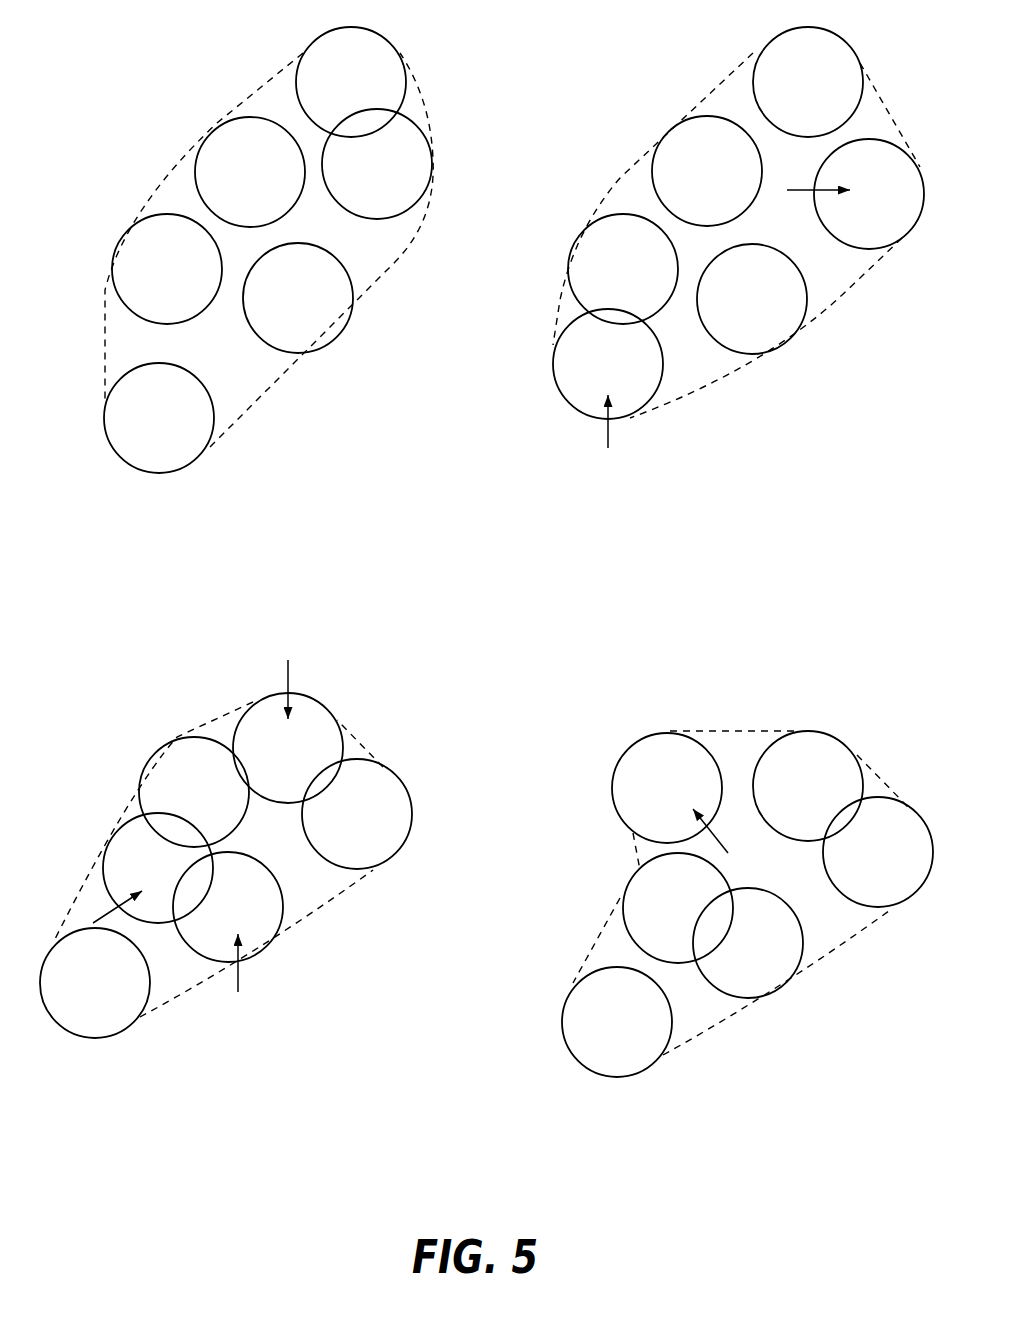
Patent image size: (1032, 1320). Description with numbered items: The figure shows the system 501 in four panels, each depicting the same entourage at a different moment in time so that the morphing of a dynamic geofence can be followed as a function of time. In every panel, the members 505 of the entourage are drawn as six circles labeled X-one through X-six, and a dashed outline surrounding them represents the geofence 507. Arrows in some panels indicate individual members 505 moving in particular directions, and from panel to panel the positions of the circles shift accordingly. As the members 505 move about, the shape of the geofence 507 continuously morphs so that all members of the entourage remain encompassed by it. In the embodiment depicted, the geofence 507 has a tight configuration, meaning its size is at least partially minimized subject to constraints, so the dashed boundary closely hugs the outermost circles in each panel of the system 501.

The system 501 is at (150, 82).
The members 505 is at (290, 210).
The geofence 507 is at (400, 255).